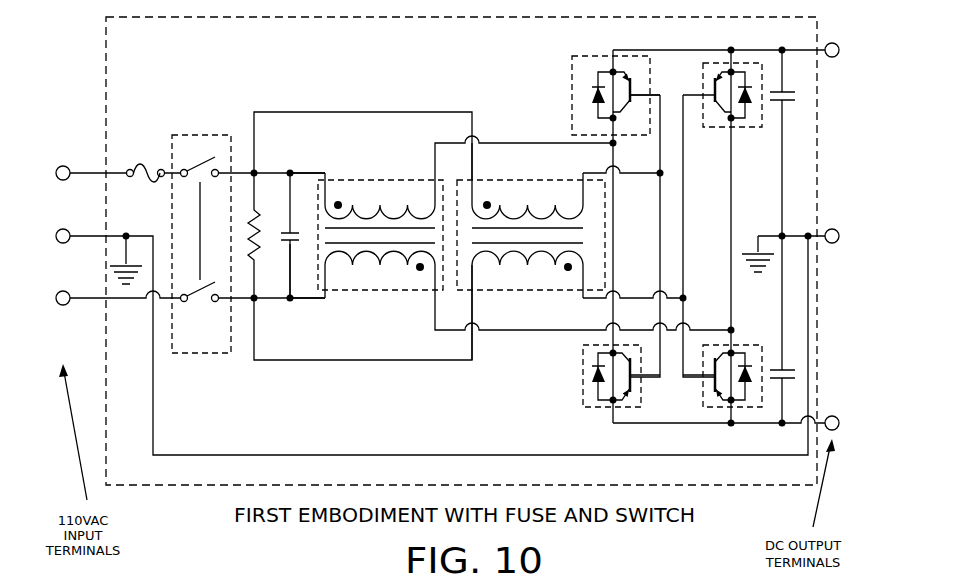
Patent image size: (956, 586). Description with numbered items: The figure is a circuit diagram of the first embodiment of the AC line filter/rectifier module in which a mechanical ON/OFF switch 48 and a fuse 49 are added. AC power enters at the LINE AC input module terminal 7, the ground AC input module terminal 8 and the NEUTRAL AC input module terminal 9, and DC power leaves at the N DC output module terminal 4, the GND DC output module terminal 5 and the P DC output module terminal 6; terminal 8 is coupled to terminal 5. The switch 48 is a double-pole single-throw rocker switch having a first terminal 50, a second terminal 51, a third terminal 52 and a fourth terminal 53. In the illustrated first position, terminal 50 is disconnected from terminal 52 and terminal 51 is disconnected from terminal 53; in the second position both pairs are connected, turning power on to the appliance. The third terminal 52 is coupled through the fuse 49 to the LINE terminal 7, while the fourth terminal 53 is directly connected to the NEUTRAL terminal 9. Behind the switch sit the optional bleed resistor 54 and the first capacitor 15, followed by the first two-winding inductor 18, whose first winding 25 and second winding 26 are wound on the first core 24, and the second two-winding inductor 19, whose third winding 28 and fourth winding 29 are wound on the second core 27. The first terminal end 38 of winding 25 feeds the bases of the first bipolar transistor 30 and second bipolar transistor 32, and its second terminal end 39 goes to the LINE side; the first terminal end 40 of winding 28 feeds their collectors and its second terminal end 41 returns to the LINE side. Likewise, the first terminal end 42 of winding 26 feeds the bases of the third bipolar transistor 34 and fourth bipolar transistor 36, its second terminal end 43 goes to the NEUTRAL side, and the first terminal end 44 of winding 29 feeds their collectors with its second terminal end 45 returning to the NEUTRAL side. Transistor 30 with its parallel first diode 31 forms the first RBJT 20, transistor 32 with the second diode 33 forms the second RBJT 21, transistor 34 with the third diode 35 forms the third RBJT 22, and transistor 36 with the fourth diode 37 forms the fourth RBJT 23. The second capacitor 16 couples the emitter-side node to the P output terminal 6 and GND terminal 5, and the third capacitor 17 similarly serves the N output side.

The DC output module terminal 4 is at (832, 416).
The GND DC output module terminal 5 is at (832, 229).
The P DC output module terminal 6 is at (832, 43).
The LINE AC input module terminal 7 is at (63, 166).
The AC input module terminal 8 is at (63, 229).
The NEUTRAL AC input module terminal 9 is at (63, 305).
The first capacitor 15 is at (283, 244).
The second capacitor 16 is at (792, 91).
The third capacitor 17 is at (792, 371).
The first two-winding inductor 18 is at (528, 180).
The second two-winding inductor 19 is at (375, 180).
The first RBJT 20 is at (572, 85).
The second RBJT 21 is at (583, 378).
The third RBJT 22 is at (703, 78).
The fourth RBJT 23 is at (742, 345).
The first core 24 is at (576, 234).
The first winding 25 is at (514, 212).
The second winding 26 is at (500, 266).
The second core 27 is at (307, 244).
The third winding 28 is at (350, 212).
The fourth winding 29 is at (347, 266).
The first bipolar transistor 30 is at (633, 105).
The first diode 31 is at (597, 74).
The second bipolar transistor 32 is at (635, 383).
The second diode 33 is at (597, 400).
The third bipolar transistor 34 is at (711, 112).
The third diode 35 is at (748, 110).
The fourth bipolar transistor 36 is at (703, 384).
The fourth diode 37 is at (752, 390).
The first terminal end of the first winding 38 is at (578, 173).
The second terminal end of the first winding 39 is at (479, 178).
The first terminal end of the third winding 40 is at (432, 172).
The second terminal end of the third winding 41 is at (334, 173).
The first terminal end of the second winding 42 is at (581, 298).
The second terminal end of the second winding 43 is at (479, 301).
The first terminal end of the fourth winding 44 is at (433, 298).
The second terminal end of the fourth winding 45 is at (326, 301).
The mechanical ON/OFF switch 48 is at (203, 135).
The fuse 49 is at (146, 165).
The first terminal 50 is at (216, 178).
The second terminal 51 is at (216, 303).
The third terminal 52 is at (185, 178).
The fourth terminal 53 is at (185, 303).
The bleed resistor 54 is at (258, 212).